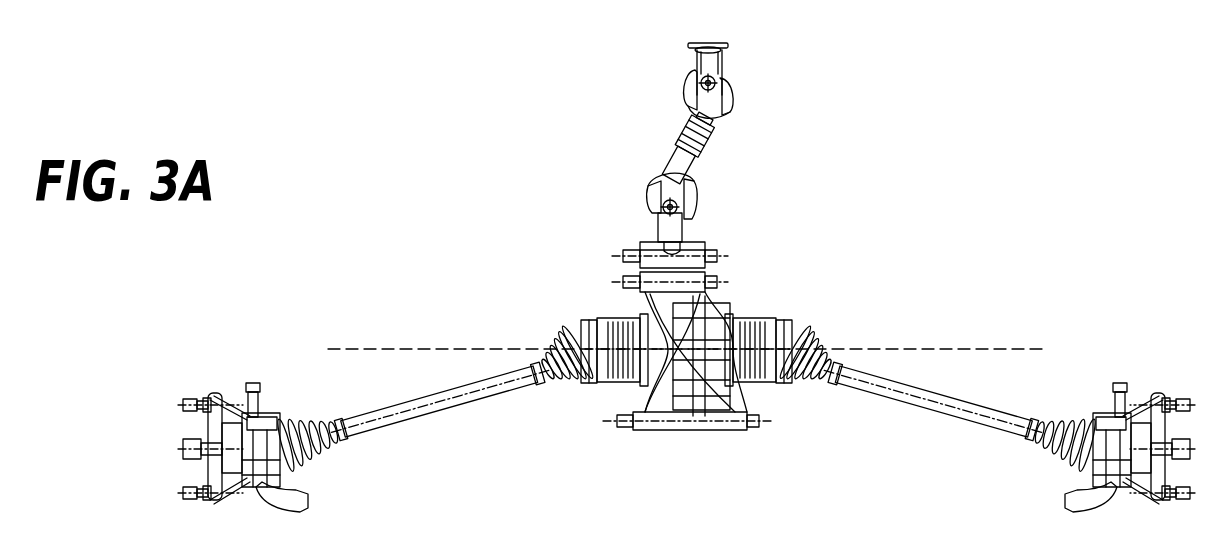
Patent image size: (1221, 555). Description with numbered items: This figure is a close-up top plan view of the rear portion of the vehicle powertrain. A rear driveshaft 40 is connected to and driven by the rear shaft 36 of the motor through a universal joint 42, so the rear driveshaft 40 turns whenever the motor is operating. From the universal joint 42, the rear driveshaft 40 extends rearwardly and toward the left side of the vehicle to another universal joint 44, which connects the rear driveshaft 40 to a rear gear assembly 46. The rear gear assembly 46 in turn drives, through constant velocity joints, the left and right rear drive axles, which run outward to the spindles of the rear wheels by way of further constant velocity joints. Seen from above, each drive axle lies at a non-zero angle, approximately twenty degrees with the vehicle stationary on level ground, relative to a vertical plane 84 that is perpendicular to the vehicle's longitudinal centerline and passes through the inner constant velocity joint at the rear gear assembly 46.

The rear shaft 36 is at (712, 45).
The rear driveshaft 40 is at (679, 131).
The universal joint 42 is at (731, 100).
The universal joint 44 is at (693, 186).
The rear gear assembly 46 is at (678, 452).
The vertical plane 84 is at (992, 346).